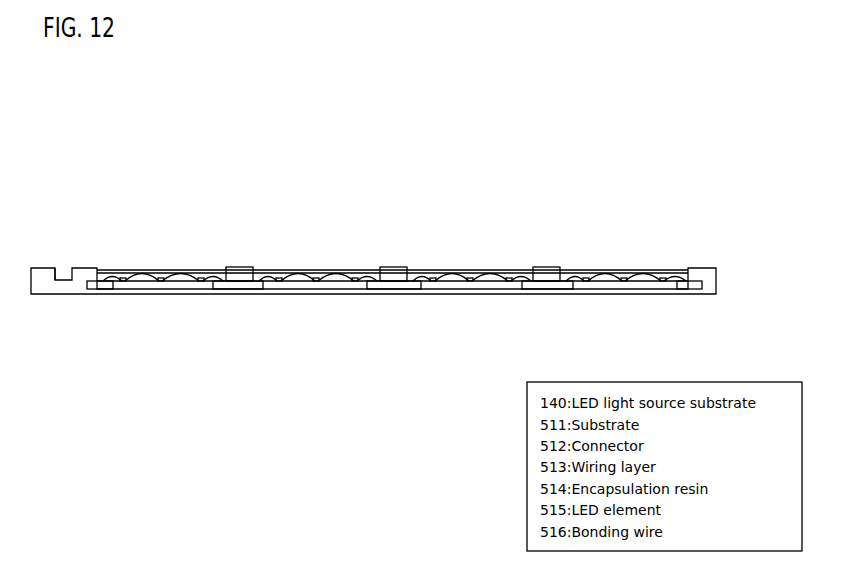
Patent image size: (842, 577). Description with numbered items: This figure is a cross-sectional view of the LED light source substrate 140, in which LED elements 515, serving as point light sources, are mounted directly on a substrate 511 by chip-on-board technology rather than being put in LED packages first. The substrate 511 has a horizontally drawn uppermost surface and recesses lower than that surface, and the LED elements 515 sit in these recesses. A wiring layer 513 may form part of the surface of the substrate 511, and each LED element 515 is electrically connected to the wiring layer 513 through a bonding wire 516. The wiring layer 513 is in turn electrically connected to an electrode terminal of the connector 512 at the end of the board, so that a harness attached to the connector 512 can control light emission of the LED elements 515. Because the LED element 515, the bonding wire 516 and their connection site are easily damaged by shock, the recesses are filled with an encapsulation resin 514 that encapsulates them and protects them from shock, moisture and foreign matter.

The LED light source substrate 140 is at (579, 207).
The substrate 511 is at (62, 289).
The connector 512 is at (46, 274).
The wiring layer 513 is at (100, 271).
The encapsulation resin 514 is at (202, 275).
The LED element 515 is at (122, 283).
The bonding wire 516 is at (182, 275).